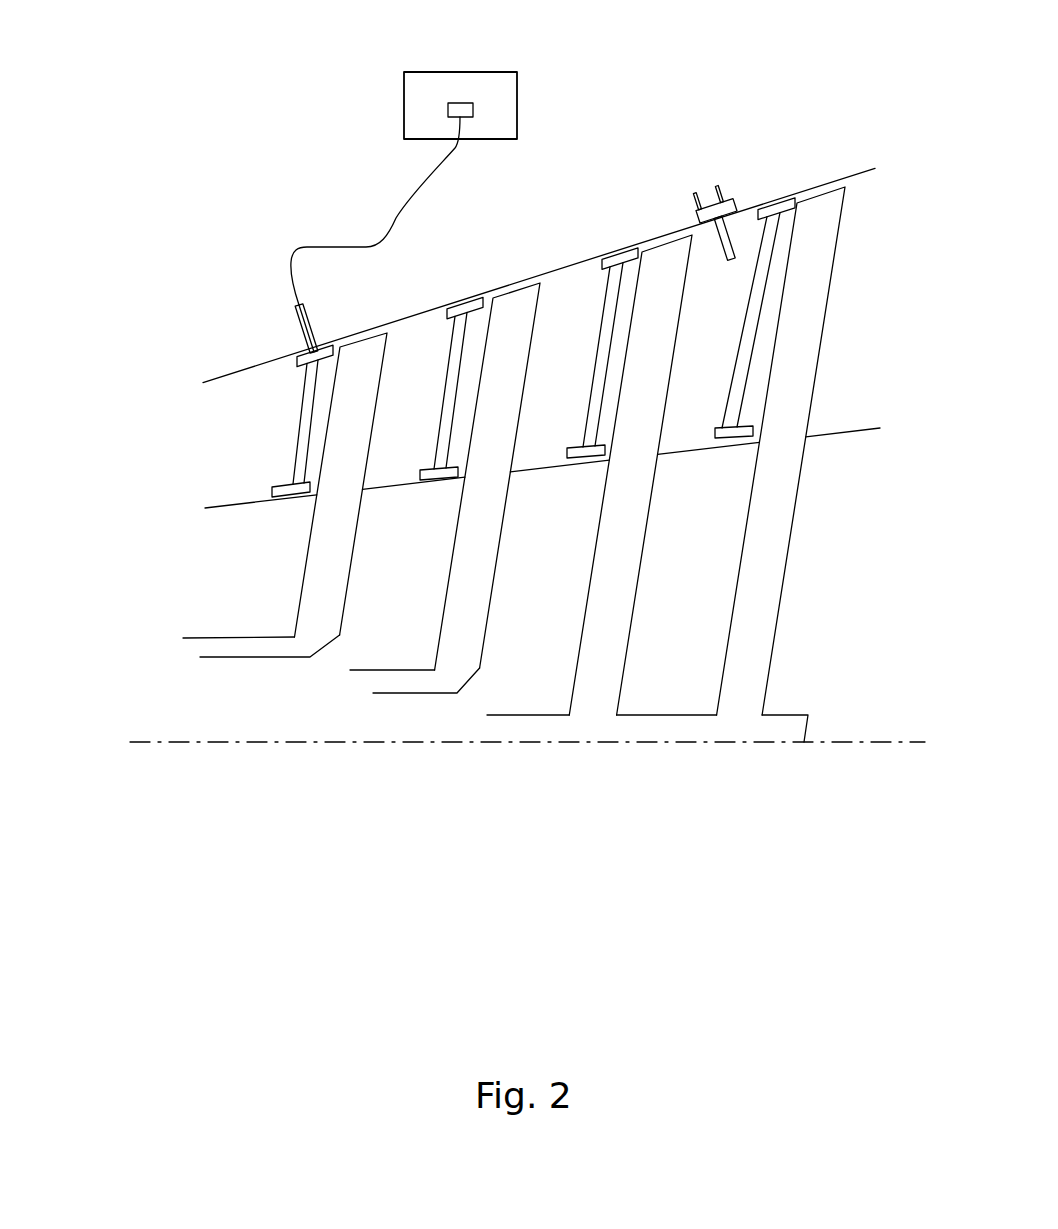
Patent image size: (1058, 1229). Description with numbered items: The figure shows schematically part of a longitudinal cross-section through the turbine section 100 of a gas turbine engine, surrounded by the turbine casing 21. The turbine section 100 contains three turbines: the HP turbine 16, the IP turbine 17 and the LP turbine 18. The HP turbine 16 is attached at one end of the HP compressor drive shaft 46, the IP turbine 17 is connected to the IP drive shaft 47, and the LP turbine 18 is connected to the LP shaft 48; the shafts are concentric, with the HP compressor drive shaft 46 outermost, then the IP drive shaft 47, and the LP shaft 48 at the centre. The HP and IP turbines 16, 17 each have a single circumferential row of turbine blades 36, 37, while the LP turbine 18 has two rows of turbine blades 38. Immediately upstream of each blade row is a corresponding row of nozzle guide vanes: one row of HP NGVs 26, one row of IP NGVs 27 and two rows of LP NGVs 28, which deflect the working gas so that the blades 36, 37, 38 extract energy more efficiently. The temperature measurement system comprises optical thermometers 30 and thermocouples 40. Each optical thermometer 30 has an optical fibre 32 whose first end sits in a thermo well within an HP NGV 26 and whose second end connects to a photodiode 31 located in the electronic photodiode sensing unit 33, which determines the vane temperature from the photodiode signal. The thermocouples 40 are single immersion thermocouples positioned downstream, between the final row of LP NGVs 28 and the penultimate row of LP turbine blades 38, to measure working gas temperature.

The turbine section 100 is at (168, 83).
The turbine casing 21 is at (490, 267).
The HP turbine 16 is at (272, 582).
The IP turbine 17 is at (424, 552).
The LP turbine 18 is at (828, 507).
The HP nozzle guide vanes 26 is at (290, 472).
The IP nozzle guide vanes 27 is at (445, 433).
The LP nozzle guide vanes 28 is at (590, 415).
The HP turbine blades 36 is at (357, 363).
The IP turbine blades 37 is at (536, 280).
The LP turbine blades 38 is at (663, 277).
The HP compressor drive shaft 46 is at (253, 648).
The IP drive shaft 47 is at (387, 682).
The LP shaft 48 is at (595, 725).
The optical thermometer 30 is at (251, 266).
The photodiode 31 is at (462, 102).
The optical fibre 32 is at (372, 241).
The electronic photodiode sensing unit 33 is at (430, 89).
The thermocouple 40 is at (733, 200).